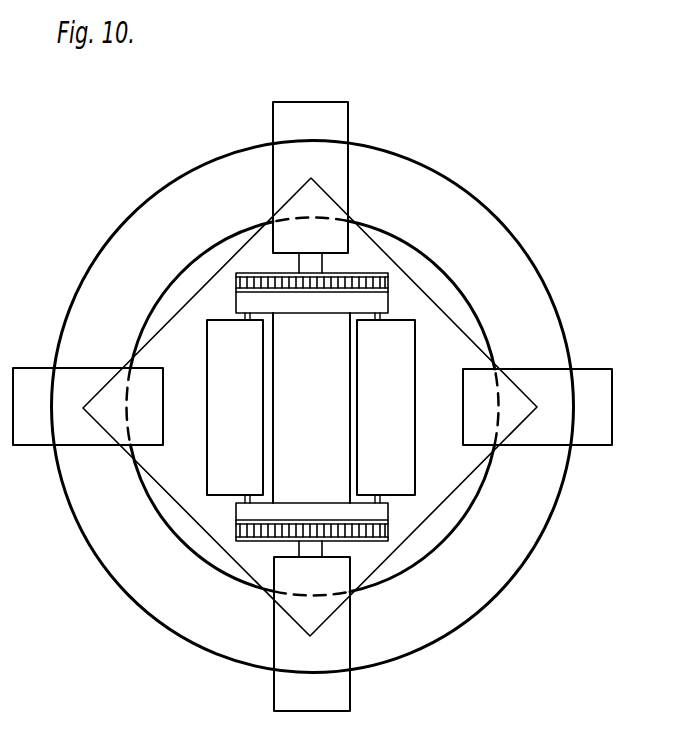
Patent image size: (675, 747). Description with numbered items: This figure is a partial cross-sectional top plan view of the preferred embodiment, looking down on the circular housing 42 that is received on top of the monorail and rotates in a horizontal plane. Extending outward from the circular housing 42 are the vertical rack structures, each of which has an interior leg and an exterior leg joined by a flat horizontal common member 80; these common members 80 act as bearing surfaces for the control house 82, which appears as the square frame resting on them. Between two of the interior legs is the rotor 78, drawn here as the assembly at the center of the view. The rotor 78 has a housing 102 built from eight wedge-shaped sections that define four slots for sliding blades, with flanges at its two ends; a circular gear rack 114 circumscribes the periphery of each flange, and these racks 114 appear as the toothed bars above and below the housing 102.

The circular housing 42 is at (538, 347).
The rotor 78 is at (420, 378).
The flat horizontal common member 80 is at (333, 130).
The control house 82 is at (430, 295).
The housing 102 is at (332, 421).
The circular gear rack 114 is at (385, 530).